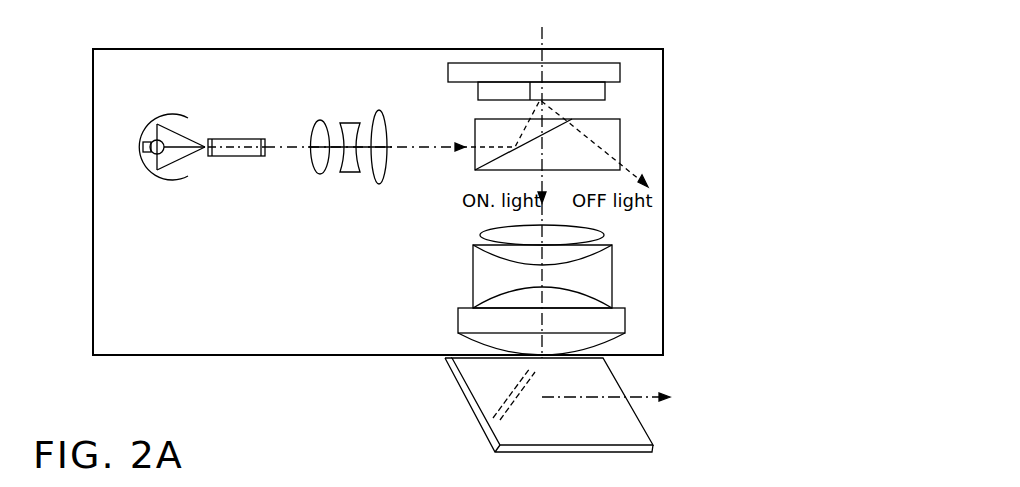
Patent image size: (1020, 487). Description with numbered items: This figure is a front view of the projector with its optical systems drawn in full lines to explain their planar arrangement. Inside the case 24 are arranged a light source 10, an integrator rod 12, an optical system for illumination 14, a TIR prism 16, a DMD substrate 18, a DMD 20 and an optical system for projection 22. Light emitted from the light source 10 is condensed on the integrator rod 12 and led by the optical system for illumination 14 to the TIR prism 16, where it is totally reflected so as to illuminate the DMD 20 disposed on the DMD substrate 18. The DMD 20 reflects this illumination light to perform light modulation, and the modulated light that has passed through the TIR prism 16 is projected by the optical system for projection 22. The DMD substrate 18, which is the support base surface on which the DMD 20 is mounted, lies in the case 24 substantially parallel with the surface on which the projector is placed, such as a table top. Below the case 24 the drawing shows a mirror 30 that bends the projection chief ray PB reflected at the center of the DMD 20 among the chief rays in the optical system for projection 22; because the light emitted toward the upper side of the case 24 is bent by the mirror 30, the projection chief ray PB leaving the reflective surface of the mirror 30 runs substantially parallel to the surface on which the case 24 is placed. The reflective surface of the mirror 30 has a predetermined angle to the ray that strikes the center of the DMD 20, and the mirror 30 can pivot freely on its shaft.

The light source 10 is at (142, 136).
The integrator rod 12 is at (233, 140).
The optical system for illumination 14 is at (388, 106).
The TIR prism 16 is at (612, 118).
The DMD substrate 18 is at (512, 63).
The DMD 20 is at (505, 90).
The optical system for projection 22 is at (433, 222).
The case 24 is at (185, 355).
The mirror 30 is at (623, 380).
The projection chief ray PB is at (647, 400).